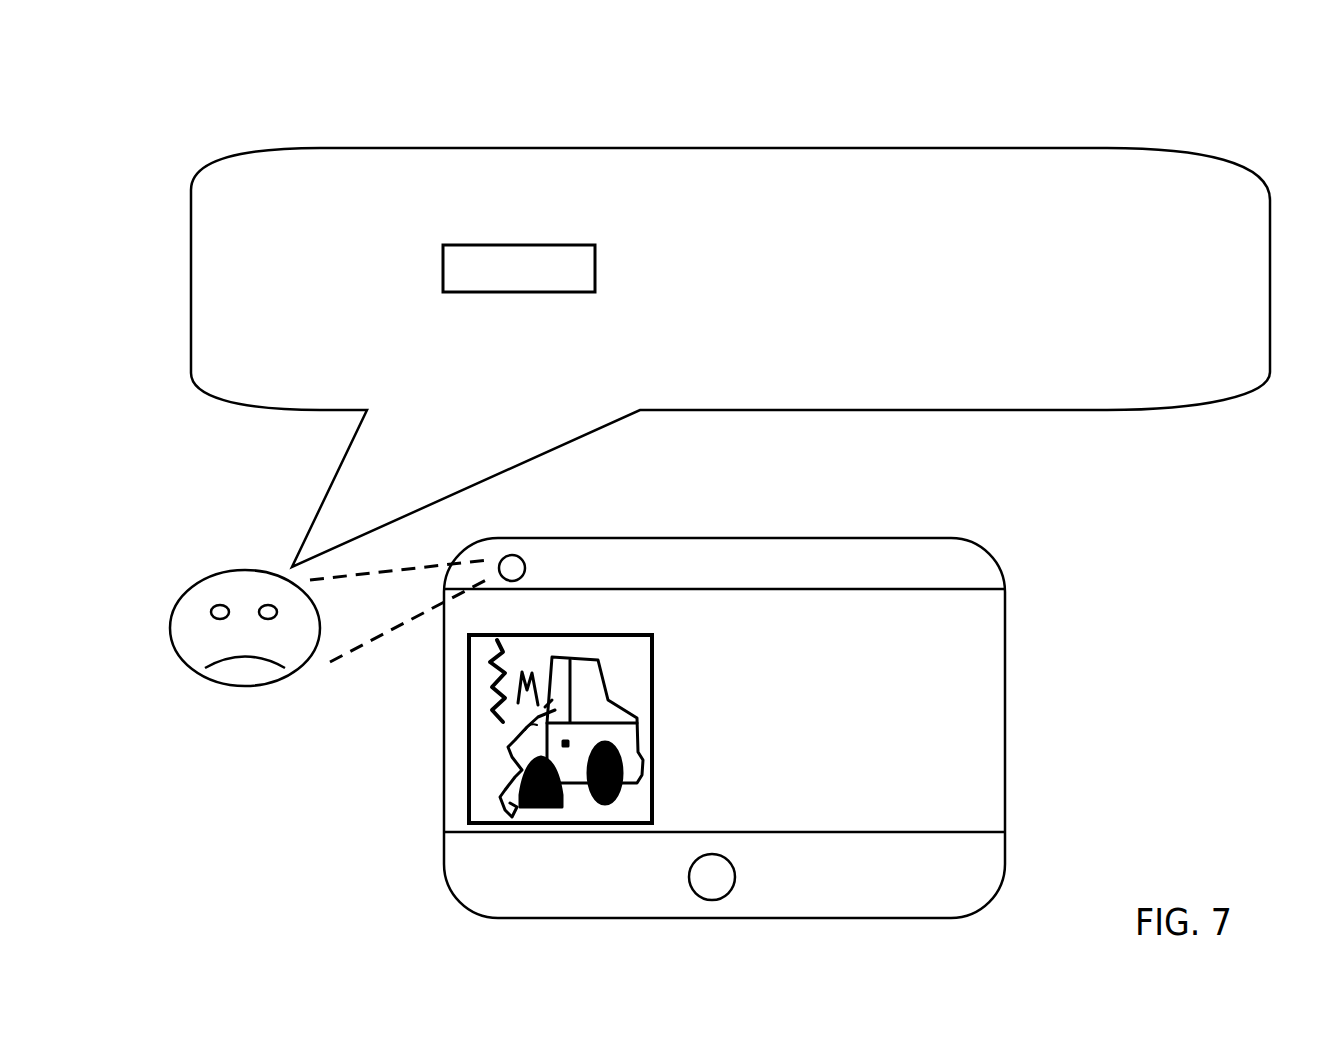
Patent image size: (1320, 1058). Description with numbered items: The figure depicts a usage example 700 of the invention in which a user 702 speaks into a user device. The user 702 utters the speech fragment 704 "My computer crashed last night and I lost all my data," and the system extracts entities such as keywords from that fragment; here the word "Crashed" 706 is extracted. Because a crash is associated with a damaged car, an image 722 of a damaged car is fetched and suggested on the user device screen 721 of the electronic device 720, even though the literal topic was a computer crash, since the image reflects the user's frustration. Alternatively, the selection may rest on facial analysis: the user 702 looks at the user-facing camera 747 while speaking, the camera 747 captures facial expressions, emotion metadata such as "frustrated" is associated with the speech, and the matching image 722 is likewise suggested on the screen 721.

The usage example 700 is at (958, 59).
The user 702 is at (218, 582).
The speech fragment 704 is at (513, 156).
The extracted word "Crashed" 706 is at (527, 246).
The electronic device 720 is at (756, 538).
The user device screen 721 is at (952, 713).
The image 722 is at (527, 643).
The user-facing camera 747 is at (513, 560).